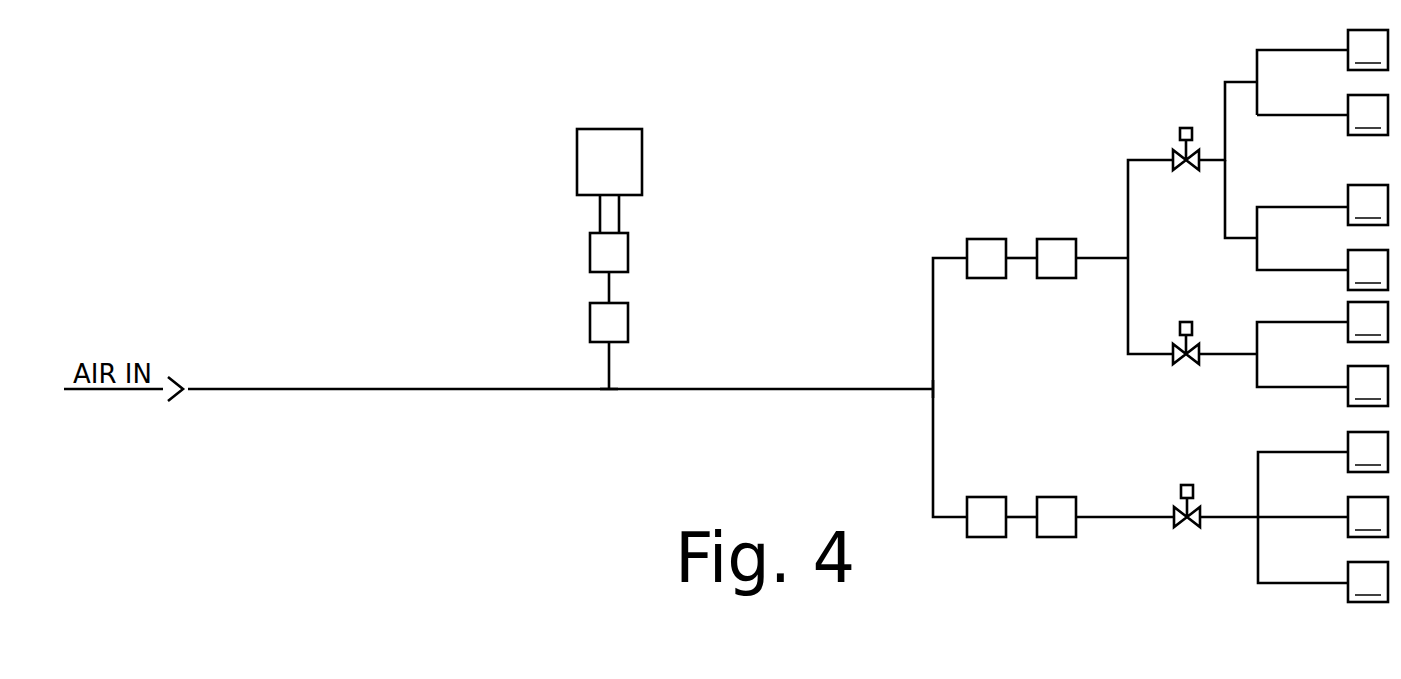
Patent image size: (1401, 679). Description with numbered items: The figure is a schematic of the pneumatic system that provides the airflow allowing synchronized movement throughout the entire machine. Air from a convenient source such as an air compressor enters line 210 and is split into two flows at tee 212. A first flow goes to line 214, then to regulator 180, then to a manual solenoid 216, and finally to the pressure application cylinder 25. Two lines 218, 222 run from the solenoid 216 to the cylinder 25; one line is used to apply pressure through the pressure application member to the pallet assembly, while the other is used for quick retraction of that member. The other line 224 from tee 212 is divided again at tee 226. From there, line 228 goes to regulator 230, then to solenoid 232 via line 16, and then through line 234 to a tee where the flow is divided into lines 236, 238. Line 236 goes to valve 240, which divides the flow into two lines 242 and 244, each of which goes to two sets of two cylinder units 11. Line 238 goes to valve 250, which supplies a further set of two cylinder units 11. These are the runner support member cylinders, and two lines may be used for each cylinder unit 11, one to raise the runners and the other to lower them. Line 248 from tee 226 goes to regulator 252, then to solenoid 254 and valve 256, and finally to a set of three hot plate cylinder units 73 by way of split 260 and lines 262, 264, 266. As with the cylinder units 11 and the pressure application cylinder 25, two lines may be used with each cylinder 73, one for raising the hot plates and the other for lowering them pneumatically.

The cylinder unit 11 is at (1368, 218).
The hot plate cylinder unit 73 is at (1368, 517).
The pressure application cylinder 25 is at (623, 180).
The line 16 is at (1023, 256).
The regulator 180 is at (628, 327).
The line 210 is at (358, 389).
The tee 212 is at (607, 388).
The line 214 is at (611, 370).
The manual solenoid 216 is at (628, 254).
The line 218 is at (599, 211).
The line 222 is at (620, 213).
The line 224 is at (772, 392).
The tee 226 is at (931, 384).
The line 228 is at (935, 330).
The regulator 230 is at (972, 242).
The solenoid 232 is at (1073, 242).
The supply line 234 is at (1123, 262).
The line 236 is at (1128, 215).
The line 238 is at (1128, 341).
The valve 240 is at (1178, 149).
The line 242 is at (1225, 115).
The line 244 is at (1257, 258).
The line 248 is at (935, 445).
The valve 250 is at (1178, 358).
The regulator 252 is at (988, 540).
The solenoid 254 is at (1055, 540).
The valve 256 is at (1183, 530).
The split 260 is at (1257, 513).
The line 262 is at (1290, 452).
The line 264 is at (1291, 517).
The line 266 is at (1290, 583).